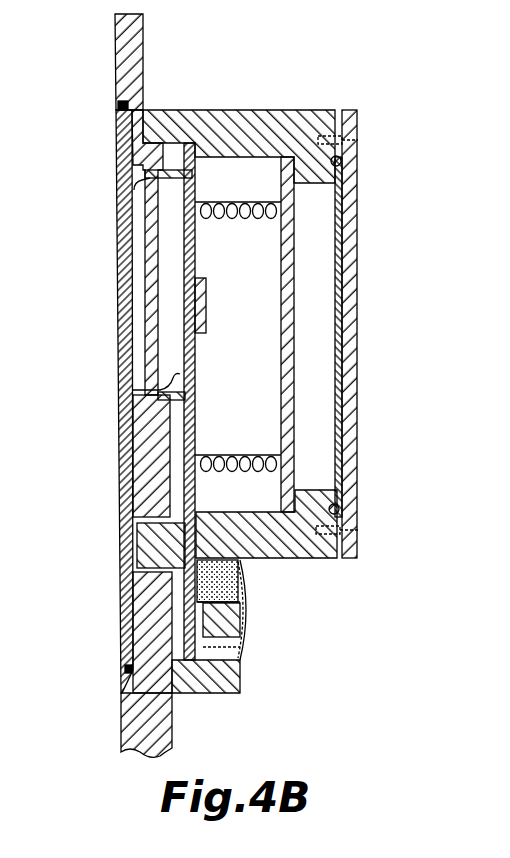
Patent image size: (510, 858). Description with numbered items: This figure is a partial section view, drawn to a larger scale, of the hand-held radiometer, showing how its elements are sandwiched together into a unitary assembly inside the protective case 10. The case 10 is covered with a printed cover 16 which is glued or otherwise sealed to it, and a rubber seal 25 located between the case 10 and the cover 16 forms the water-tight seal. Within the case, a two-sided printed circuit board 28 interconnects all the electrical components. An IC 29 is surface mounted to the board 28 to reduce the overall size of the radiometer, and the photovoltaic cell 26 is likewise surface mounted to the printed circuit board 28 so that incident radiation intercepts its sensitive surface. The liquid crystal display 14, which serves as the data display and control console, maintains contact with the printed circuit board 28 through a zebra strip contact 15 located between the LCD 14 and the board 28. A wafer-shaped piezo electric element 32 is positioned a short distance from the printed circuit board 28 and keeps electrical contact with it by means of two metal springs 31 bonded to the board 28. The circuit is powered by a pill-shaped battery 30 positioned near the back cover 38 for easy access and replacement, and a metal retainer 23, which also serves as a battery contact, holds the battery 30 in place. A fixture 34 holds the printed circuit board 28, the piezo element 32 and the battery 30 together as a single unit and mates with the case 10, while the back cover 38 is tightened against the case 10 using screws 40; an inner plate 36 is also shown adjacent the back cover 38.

The protective case 10 is at (126, 728).
The liquid crystal display 14 is at (145, 295).
The zebra strip contact 15 is at (150, 183).
The printed cover 16 is at (121, 330).
The retainer 23 is at (245, 620).
The rubber seal 25 is at (126, 668).
The photovoltaic cell 26 is at (150, 551).
The printed circuit board 28 is at (195, 240).
The IC 29 is at (205, 308).
The battery 30 is at (240, 580).
The metal springs 31 is at (230, 202).
The piezo electric element 32 is at (294, 262).
The fixture 34 is at (252, 112).
The inner plate 36 is at (342, 268).
The back cover 38 is at (357, 383).
The screws 40 is at (357, 145).